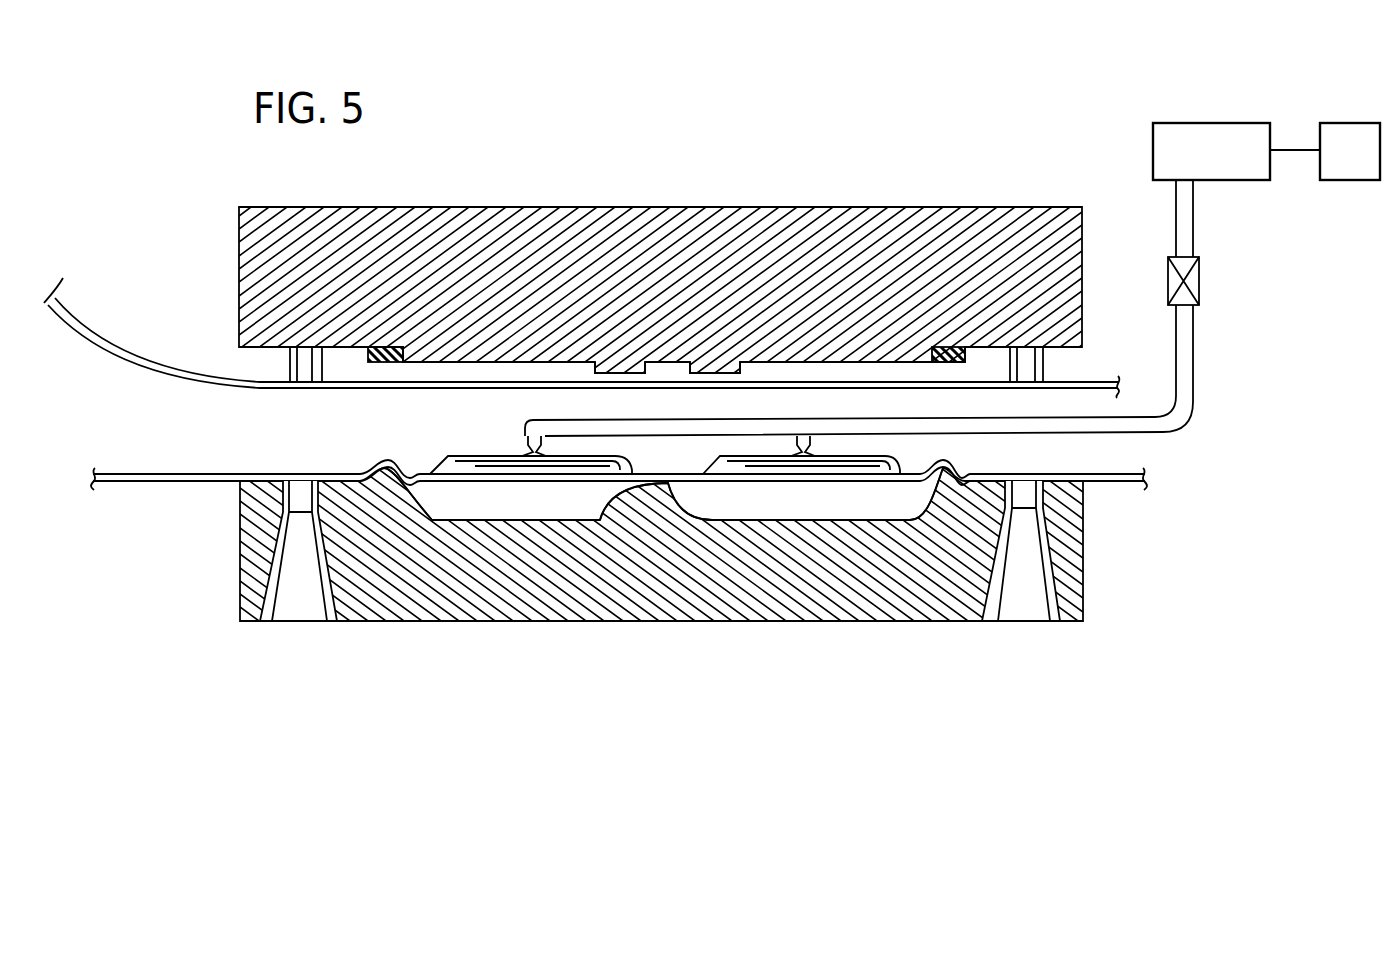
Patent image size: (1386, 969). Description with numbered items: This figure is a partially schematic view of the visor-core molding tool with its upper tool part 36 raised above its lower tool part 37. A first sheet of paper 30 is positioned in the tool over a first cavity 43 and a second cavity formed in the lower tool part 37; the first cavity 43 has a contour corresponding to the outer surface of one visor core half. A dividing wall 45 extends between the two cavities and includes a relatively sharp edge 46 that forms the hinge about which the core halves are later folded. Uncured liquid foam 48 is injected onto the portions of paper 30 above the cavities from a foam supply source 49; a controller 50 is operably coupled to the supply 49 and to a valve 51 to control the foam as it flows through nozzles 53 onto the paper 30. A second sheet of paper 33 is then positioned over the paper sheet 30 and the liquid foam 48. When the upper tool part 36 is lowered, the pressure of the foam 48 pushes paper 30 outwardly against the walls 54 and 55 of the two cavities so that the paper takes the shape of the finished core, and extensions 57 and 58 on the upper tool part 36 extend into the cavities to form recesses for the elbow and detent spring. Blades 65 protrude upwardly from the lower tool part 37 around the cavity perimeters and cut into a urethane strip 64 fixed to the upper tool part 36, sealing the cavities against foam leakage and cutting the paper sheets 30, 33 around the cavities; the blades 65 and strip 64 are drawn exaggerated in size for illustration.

The first sheet of paper 30 is at (185, 486).
The second sheet of paper 33 is at (98, 330).
The upper tool part 36 is at (1072, 256).
The lower tool part 37 is at (1073, 543).
The first cavity 43 is at (428, 497).
The dividing wall 45 is at (668, 500).
The sharp edge 46 is at (665, 485).
The uncured liquid foam 48 is at (722, 455).
The foam supply source 49 is at (1236, 151).
The controller 50 is at (1350, 151).
The valve 51 is at (1193, 283).
The nozzle 53 is at (522, 444).
The wall of first cavity 54 is at (505, 503).
The wall of second cavity 55 is at (835, 520).
The extension 57 is at (595, 372).
The extension 58 is at (740, 372).
The urethane strip 64 is at (368, 353).
The blade 65 is at (903, 230).